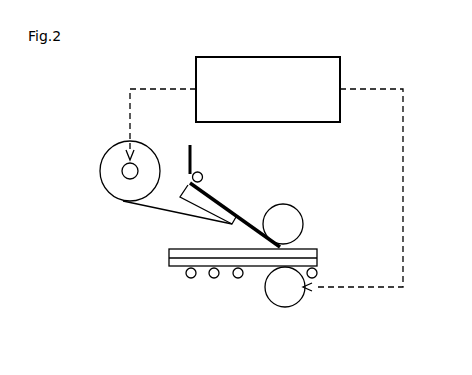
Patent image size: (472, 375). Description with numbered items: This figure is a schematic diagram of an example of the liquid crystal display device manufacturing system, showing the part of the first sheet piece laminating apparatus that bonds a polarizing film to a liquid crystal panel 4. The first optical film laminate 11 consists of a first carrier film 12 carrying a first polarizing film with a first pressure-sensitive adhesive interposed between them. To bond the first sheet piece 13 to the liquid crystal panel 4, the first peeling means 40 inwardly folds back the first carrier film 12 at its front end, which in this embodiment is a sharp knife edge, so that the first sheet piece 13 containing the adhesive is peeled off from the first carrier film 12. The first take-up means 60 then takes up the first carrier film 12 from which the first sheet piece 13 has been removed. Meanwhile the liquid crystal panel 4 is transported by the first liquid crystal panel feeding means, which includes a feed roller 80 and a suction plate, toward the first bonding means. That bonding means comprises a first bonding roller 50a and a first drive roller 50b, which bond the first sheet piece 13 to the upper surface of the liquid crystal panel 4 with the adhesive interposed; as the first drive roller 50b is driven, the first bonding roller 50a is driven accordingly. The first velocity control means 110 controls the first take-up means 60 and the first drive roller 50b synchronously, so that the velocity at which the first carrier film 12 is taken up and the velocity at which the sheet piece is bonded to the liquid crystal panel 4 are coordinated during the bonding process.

The first velocity control means 110 is at (196, 72).
The first take-up means 60 is at (122, 168).
The first carrier film 12 is at (160, 208).
The first optical film laminate 11 is at (192, 156).
The first peeling means 40 is at (184, 188).
The first sheet piece 13 is at (246, 216).
The first bonding roller 50a is at (297, 204).
The liquid crystal panel 4 is at (165, 260).
The feed roller 80 is at (178, 283).
The first drive roller 50b is at (290, 303).